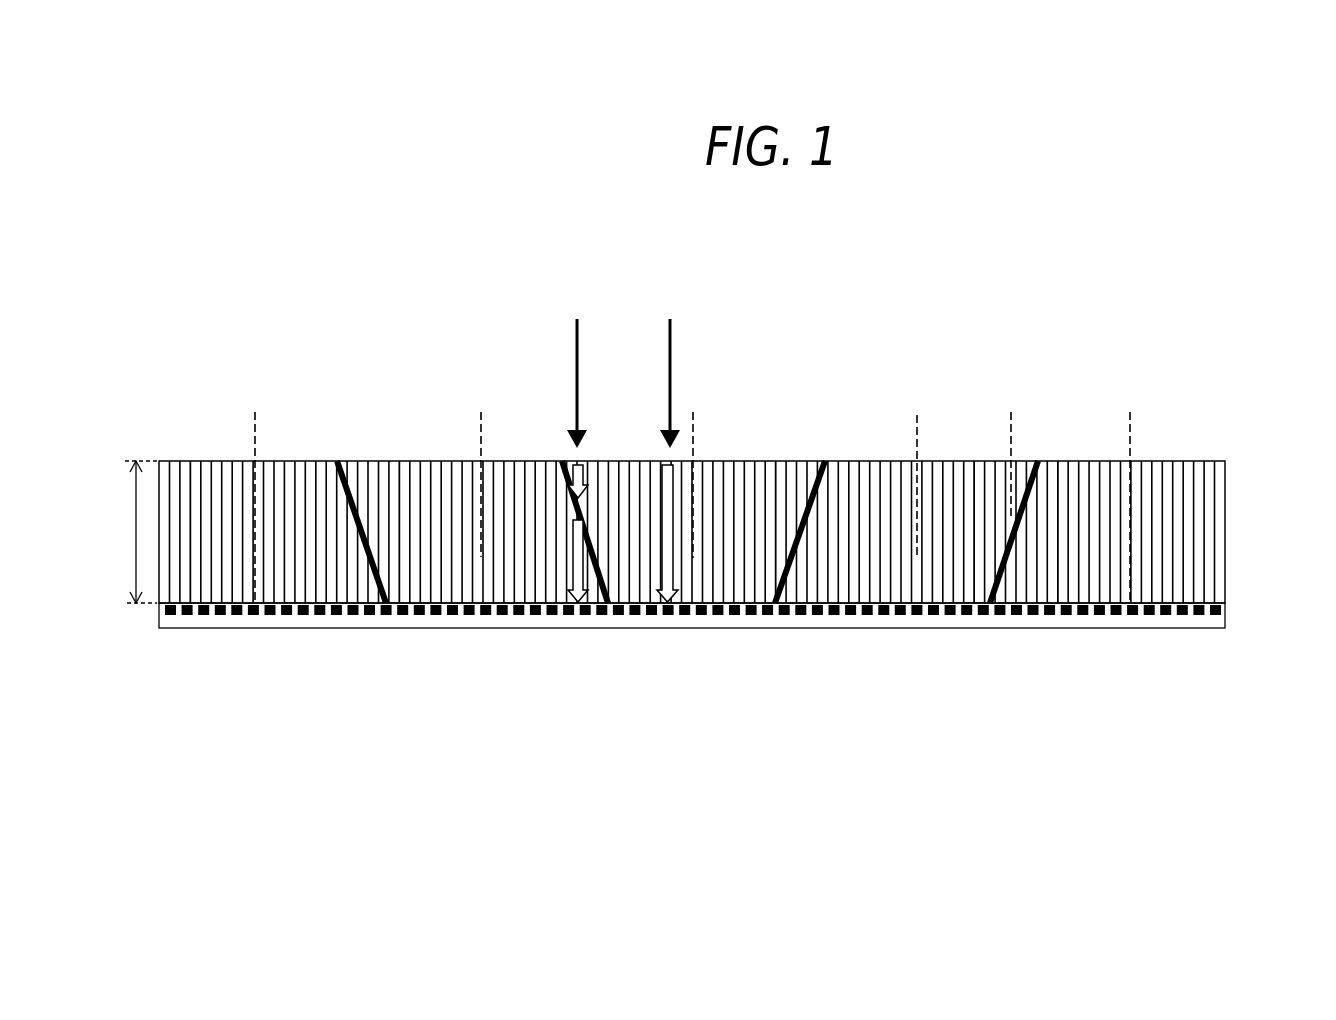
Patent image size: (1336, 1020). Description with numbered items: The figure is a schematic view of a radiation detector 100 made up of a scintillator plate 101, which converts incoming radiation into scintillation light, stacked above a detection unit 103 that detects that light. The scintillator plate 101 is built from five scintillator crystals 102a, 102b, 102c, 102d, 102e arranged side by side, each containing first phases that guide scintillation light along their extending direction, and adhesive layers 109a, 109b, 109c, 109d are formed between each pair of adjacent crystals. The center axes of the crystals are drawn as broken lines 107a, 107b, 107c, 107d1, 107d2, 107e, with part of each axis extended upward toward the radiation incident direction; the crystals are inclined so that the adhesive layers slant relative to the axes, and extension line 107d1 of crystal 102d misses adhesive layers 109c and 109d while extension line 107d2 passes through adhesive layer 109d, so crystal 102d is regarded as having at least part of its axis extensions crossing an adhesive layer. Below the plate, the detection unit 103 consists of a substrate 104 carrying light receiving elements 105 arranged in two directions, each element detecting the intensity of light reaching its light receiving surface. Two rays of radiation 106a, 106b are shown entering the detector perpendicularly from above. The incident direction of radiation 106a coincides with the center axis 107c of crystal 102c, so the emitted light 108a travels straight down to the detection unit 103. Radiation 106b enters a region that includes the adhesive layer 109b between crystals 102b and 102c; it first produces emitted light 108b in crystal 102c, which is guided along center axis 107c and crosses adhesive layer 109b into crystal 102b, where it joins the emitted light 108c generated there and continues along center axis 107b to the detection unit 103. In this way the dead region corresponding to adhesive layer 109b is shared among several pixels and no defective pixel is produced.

The radiation detector 100 is at (217, 329).
The scintillator plate 101 is at (1233, 462).
The scintillator crystal 102a is at (195, 461).
The scintillator crystal 102b is at (395, 465).
The scintillator crystal 102c is at (778, 465).
The scintillator crystal 102d is at (977, 466).
The scintillator crystal 102e is at (1062, 463).
The detection unit 103 is at (692, 675).
The substrate 104 is at (1128, 620).
The light receiving elements 105 is at (1178, 617).
The radiation 106a is at (669, 367).
The radiation 106b is at (579, 367).
The center axis 107a is at (258, 414).
The center axis 107b is at (478, 413).
The center axis 107c is at (696, 416).
The center axis 107d1 is at (913, 418).
The extension line of center axis 107d2 is at (1008, 414).
The center axis 107e is at (1134, 416).
The emitted light 108a is at (663, 478).
The emitted light 108b is at (584, 478).
The emitted light 108c is at (572, 528).
The adhesive layer 109a is at (338, 462).
The adhesive layer 109b is at (566, 461).
The adhesive layer 109c is at (830, 462).
The adhesive layer 109d is at (1032, 462).